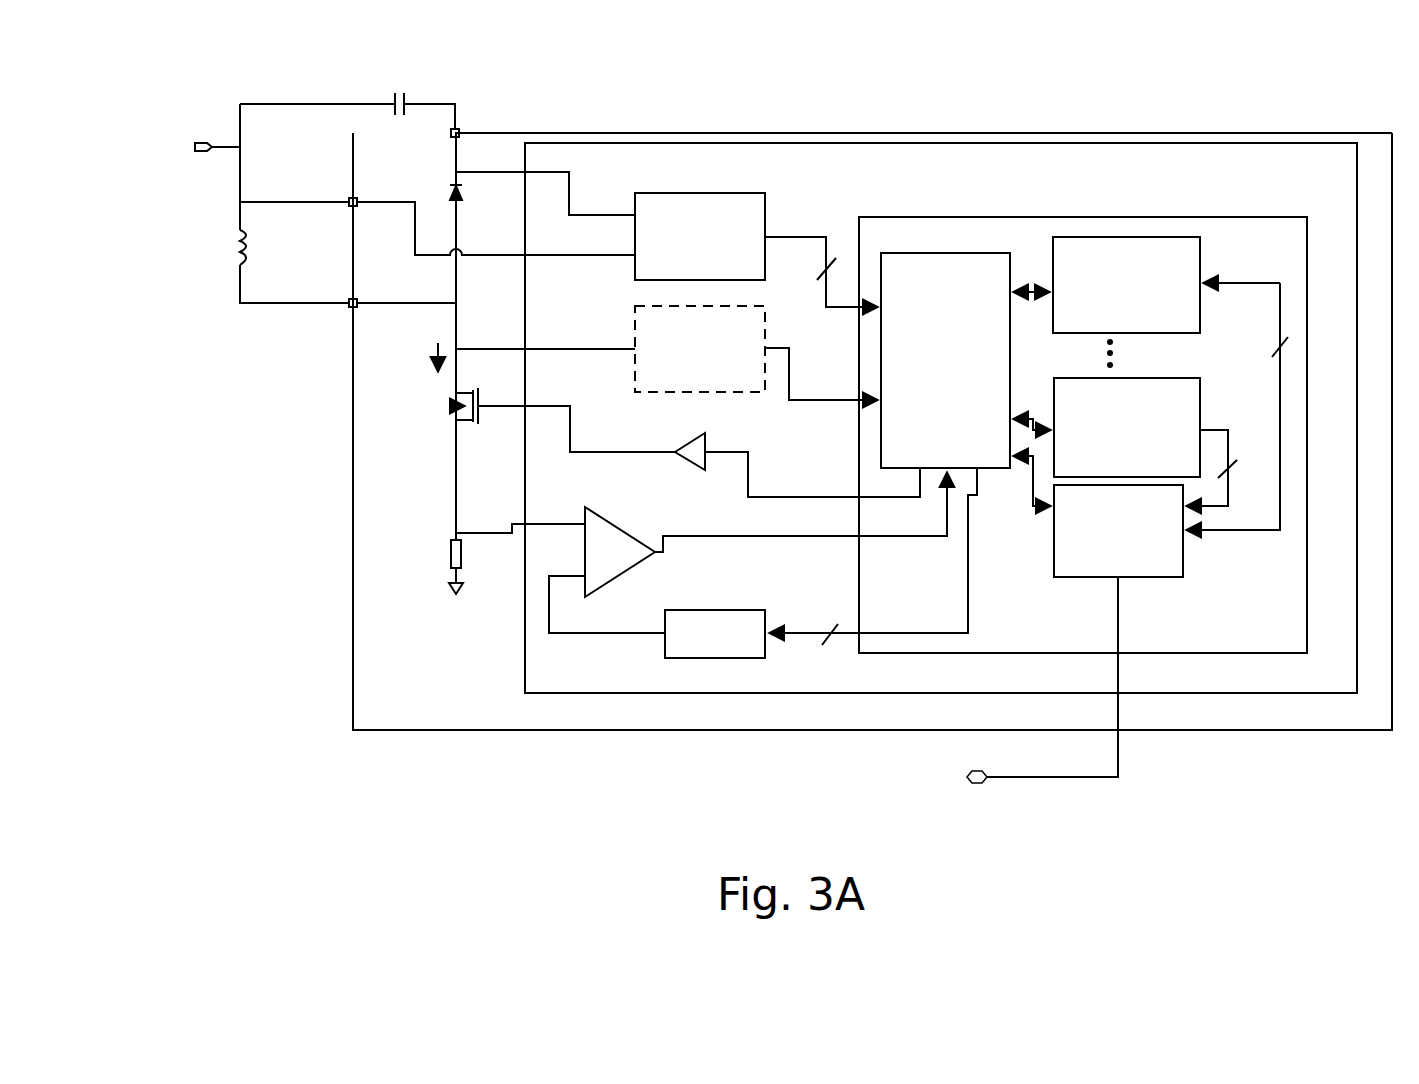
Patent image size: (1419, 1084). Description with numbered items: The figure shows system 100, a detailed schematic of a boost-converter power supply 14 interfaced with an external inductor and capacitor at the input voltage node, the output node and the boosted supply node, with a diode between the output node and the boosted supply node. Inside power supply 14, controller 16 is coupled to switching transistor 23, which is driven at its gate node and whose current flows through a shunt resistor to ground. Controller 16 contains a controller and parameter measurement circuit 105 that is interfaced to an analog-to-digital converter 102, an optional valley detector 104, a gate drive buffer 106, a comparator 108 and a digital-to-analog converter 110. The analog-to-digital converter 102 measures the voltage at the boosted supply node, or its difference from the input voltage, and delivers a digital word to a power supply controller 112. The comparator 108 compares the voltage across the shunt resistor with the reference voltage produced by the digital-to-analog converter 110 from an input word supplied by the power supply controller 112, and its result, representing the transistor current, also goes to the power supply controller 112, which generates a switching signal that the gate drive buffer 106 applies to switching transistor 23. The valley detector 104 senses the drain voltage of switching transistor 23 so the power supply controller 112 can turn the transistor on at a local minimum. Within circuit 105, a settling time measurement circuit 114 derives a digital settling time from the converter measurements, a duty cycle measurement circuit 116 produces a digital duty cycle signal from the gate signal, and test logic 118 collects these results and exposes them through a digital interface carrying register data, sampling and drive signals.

The system 100 is at (188, 60).
The power supply 14 is at (1118, 133).
The controller 16 is at (557, 685).
The switching transistor 23 is at (455, 408).
The analog-to-digital converter 102 is at (635, 262).
The valley detector 104 is at (765, 308).
The controller and parameter measurement circuit 105 is at (1153, 217).
The gate drive buffer 106 is at (705, 436).
The comparator 108 is at (620, 527).
The digital-to-analog converter 110 is at (718, 610).
The power supply controller 112 is at (945, 253).
The settling time measurement circuit 114 is at (1200, 308).
The duty cycle measurement circuit 116 is at (1200, 400).
The test logic 118 is at (1183, 553).